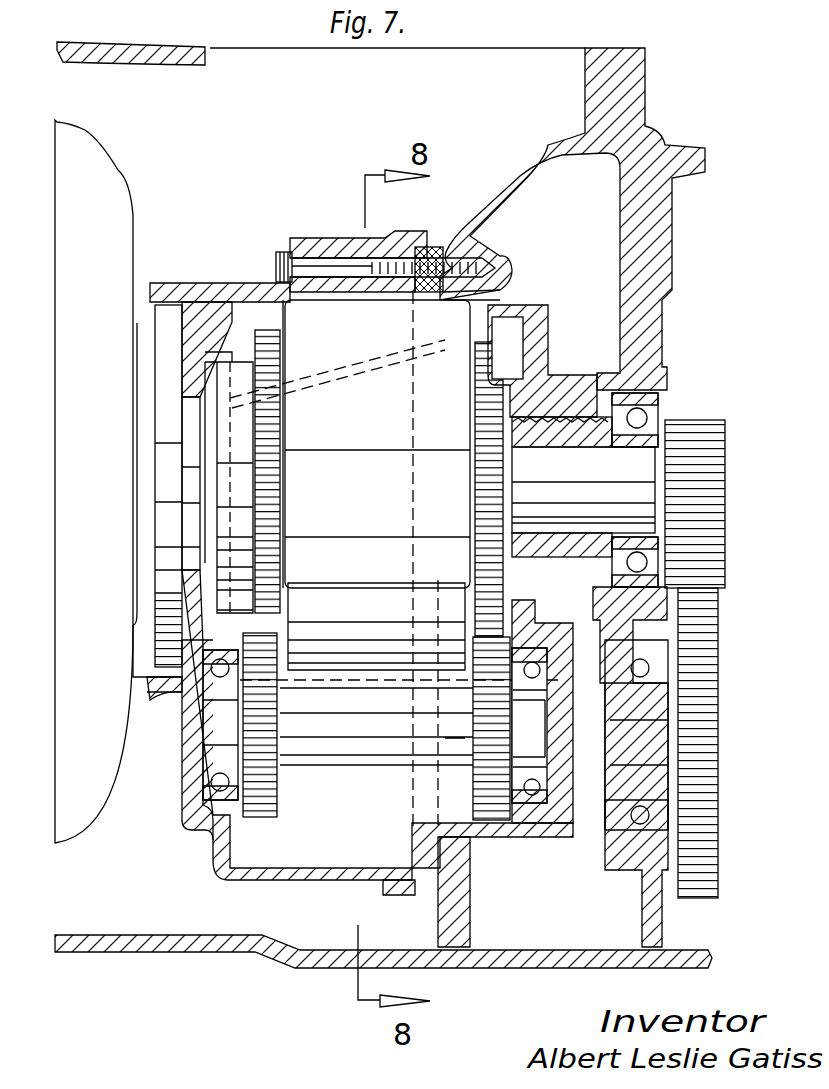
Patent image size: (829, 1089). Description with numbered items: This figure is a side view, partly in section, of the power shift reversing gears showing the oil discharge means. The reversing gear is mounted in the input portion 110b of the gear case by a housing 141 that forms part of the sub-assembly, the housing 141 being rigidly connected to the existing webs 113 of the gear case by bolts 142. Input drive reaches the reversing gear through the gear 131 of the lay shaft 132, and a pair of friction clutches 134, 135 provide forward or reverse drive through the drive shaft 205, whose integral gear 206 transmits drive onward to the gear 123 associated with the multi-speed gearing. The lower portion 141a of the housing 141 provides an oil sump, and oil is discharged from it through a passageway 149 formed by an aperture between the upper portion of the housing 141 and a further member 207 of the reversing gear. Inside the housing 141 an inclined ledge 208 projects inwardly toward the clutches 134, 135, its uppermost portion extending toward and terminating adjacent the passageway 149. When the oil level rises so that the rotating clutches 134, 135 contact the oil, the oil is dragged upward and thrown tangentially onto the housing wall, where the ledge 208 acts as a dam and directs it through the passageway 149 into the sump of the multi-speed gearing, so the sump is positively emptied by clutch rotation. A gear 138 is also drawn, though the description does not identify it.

The bolt 142 is at (276, 262).
The friction clutch 134 is at (320, 307).
The friction clutch 135 is at (422, 310).
The passageway 149 is at (468, 298).
The further member 207 is at (518, 312).
The inclined ledge 208 is at (381, 345).
The integral gear 206 is at (687, 423).
The drive shaft 205 is at (585, 490).
The housing 141 is at (190, 778).
The gear 131 is at (268, 800).
The lay shaft 132 is at (372, 765).
The gear 138 is at (483, 785).
The lower portion of the housing 141a is at (320, 849).
The input portion of the gear case 110b is at (223, 942).
The web 113 is at (460, 893).
The gear 123 is at (698, 878).